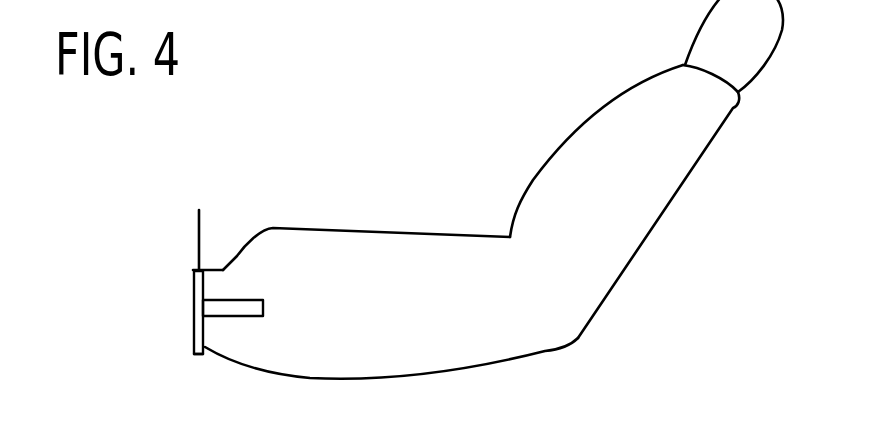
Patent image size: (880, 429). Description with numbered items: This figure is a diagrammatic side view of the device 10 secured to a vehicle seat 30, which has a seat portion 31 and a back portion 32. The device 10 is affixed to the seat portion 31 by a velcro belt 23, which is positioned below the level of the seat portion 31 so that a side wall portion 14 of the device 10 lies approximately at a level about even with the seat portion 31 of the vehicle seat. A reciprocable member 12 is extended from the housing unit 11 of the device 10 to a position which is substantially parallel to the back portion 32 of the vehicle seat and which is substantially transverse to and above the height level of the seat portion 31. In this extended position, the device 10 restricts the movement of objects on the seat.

The device 10 is at (162, 306).
The housing unit 11 is at (198, 357).
The reciprocable member 12 is at (199, 216).
The side wall portion 14 is at (193, 270).
The velcro belt 23 is at (242, 364).
The vehicle seat 30 is at (508, 168).
The seat portion 31 is at (235, 254).
The back portion 32 is at (668, 165).